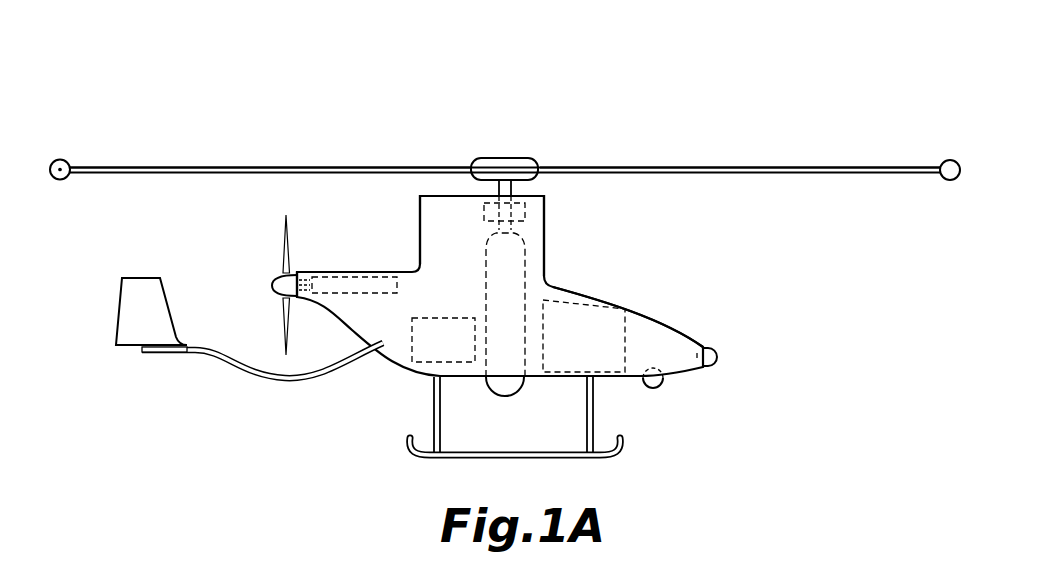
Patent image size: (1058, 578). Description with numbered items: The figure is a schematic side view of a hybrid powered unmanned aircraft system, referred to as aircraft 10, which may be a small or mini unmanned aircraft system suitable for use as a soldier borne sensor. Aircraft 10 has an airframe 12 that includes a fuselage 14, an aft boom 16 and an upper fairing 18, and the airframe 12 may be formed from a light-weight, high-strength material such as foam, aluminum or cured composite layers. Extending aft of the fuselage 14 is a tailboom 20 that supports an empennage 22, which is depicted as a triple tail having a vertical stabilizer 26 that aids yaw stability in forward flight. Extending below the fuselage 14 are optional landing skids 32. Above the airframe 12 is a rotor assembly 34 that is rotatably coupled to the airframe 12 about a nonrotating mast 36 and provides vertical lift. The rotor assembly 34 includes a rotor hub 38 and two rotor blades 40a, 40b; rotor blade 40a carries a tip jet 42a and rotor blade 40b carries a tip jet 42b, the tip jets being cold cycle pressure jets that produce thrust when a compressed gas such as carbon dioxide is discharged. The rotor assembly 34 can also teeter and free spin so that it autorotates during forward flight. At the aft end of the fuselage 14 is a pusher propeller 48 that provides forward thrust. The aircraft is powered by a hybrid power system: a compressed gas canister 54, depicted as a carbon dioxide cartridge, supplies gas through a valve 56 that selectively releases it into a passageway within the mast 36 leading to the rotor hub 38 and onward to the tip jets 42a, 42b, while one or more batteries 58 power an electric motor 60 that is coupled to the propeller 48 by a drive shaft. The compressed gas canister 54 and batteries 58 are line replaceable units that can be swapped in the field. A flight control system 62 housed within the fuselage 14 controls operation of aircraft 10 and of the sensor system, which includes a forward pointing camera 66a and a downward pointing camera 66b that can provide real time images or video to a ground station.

The aircraft 10 is at (586, 78).
The airframe 12 is at (601, 281).
The fuselage 14 is at (661, 313).
The aft boom 16 is at (300, 274).
The upper fairing 18 is at (545, 212).
The tailboom 20 is at (288, 383).
The empennage 22 is at (150, 340).
The vertical stabilizer 26 is at (135, 298).
The landing skids 32 is at (598, 412).
The rotor assembly 34 is at (358, 158).
The nonrotating mast 36 is at (497, 190).
The rotor hub 38 is at (505, 165).
The rotor blade 40a is at (808, 166).
The rotor blade 40b is at (131, 166).
The tip jet 42a is at (950, 160).
The tip jet 42b is at (61, 159).
The pusher propeller 48 is at (276, 250).
The compressed gas canister 54 is at (494, 324).
The valve 56 is at (484, 212).
The batteries 58 is at (573, 349).
The electric motor 60 is at (357, 278).
The flight control system 62 is at (433, 349).
The forward pointing camera 66a is at (718, 357).
The downward pointing camera 66b is at (662, 386).